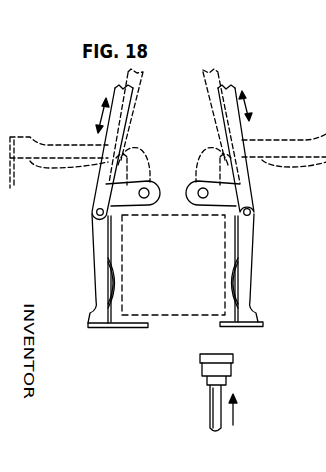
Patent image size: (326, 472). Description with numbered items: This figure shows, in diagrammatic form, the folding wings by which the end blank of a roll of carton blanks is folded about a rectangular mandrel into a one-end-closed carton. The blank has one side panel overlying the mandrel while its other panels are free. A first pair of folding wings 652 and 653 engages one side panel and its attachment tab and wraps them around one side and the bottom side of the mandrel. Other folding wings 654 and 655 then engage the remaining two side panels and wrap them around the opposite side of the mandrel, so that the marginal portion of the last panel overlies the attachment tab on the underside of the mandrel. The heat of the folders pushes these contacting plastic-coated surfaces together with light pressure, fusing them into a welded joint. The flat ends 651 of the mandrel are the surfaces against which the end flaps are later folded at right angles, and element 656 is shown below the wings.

The flat end of the mandrel 651 is at (178, 318).
The folding wing 652 is at (252, 260).
The folding wing 653 is at (246, 327).
The folding wing 654 is at (96, 255).
The folding wing 655 is at (103, 328).
The actuating pin 656 is at (227, 378).